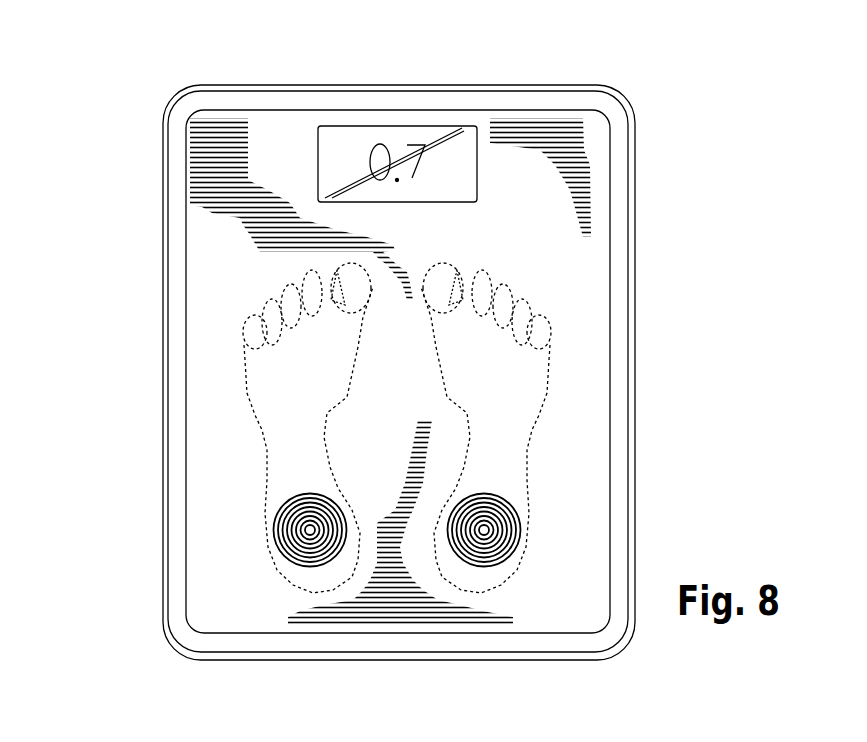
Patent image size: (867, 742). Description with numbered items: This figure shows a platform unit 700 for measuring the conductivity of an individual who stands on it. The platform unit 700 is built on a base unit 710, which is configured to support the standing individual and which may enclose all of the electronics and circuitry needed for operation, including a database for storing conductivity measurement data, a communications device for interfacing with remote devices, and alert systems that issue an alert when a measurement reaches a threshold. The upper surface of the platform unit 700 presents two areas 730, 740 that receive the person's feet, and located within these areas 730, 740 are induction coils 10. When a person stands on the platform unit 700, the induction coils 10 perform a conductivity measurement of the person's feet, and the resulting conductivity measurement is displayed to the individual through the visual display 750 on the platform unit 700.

The platform unit 700 is at (132, 118).
The base unit 710 is at (636, 178).
The visual display 750 is at (447, 128).
The area for receiving a person's foot 740 is at (250, 373).
The area for receiving a person's foot 730 is at (545, 380).
The induction coil 10 is at (352, 530).